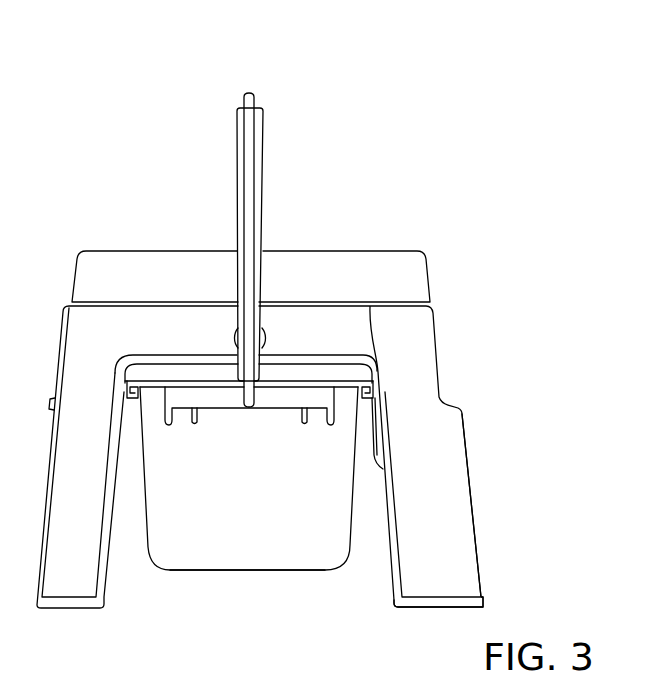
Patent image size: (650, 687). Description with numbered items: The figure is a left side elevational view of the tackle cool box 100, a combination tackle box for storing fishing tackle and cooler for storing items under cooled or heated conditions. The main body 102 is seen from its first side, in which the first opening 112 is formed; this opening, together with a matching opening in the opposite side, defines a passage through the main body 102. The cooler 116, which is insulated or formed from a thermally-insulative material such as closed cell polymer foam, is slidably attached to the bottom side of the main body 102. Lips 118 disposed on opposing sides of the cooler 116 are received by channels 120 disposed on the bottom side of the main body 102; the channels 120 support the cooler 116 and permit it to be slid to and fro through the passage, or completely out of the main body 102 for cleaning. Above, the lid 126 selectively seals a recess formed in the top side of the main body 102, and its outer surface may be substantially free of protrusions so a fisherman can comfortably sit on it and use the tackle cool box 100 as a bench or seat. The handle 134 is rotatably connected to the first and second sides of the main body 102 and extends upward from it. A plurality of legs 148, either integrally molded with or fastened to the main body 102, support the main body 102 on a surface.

The tackle cool box 100 is at (443, 220).
The main body 102 is at (437, 313).
The first opening 112 is at (365, 515).
The cooler 116 is at (287, 571).
The lips 118 is at (372, 385).
The channels 120 is at (376, 398).
The lid 126 is at (383, 251).
The handle 134 is at (250, 90).
The legs 148 is at (480, 575).